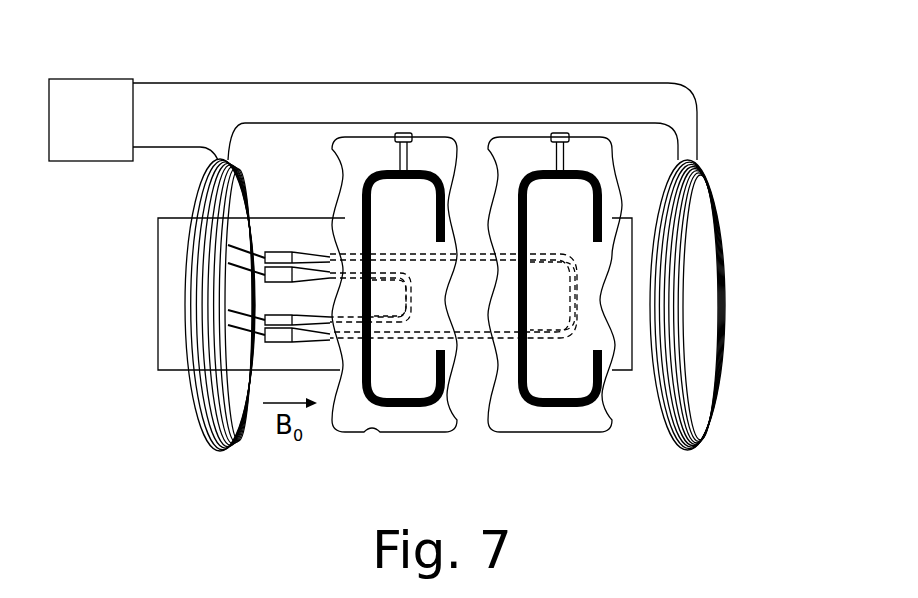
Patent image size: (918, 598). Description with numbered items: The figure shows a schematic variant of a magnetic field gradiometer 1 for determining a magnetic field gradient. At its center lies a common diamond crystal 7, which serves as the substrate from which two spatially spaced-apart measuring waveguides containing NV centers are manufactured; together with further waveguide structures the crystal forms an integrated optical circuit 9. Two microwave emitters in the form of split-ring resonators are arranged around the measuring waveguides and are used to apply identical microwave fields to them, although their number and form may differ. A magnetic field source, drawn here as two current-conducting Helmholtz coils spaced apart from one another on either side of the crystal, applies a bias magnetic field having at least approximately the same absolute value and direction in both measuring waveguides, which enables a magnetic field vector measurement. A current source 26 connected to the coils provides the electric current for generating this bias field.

The magnetic field gradiometer 1 is at (91, 525).
The diamond crystal 7 is at (395, 230).
The integrated optical circuit 9 is at (288, 218).
The current source 26 is at (88, 78).